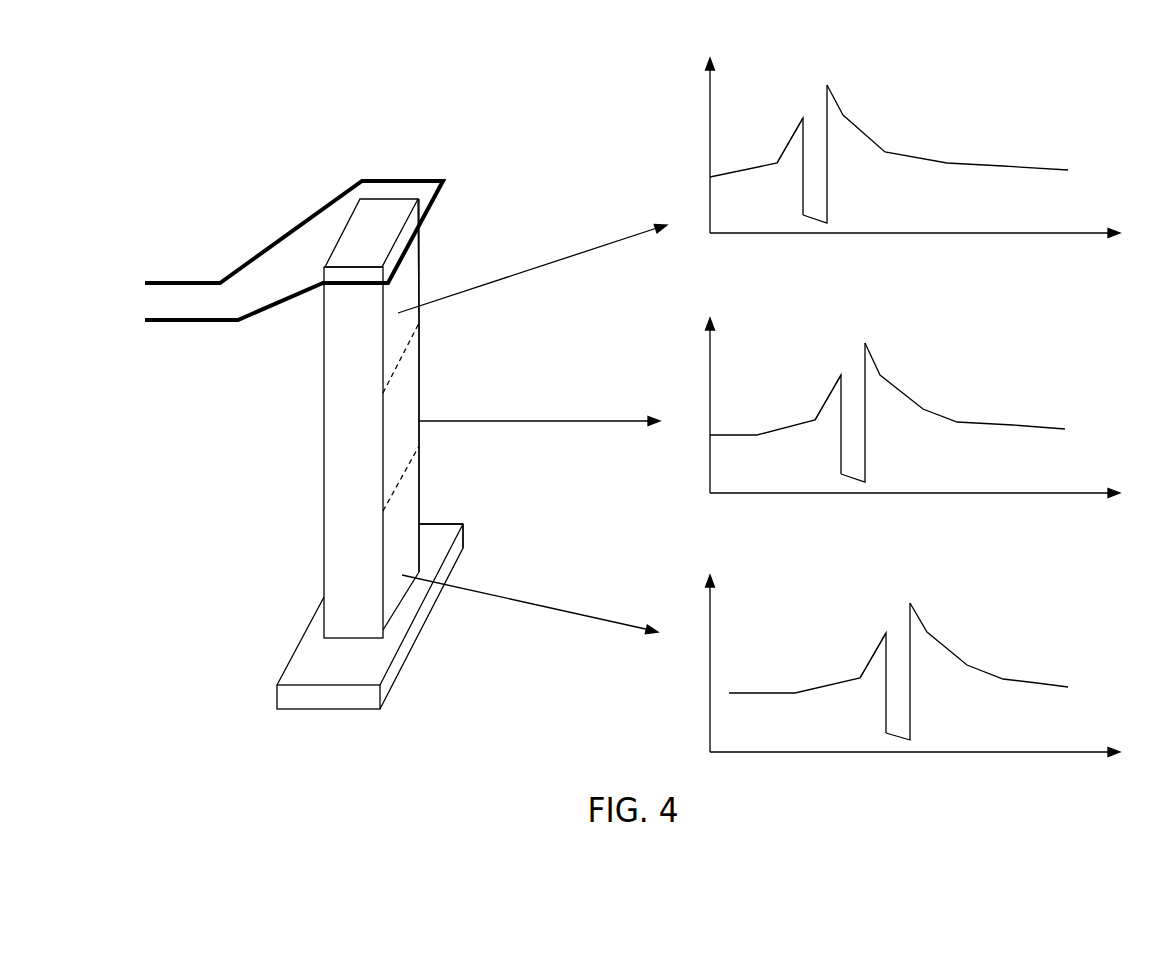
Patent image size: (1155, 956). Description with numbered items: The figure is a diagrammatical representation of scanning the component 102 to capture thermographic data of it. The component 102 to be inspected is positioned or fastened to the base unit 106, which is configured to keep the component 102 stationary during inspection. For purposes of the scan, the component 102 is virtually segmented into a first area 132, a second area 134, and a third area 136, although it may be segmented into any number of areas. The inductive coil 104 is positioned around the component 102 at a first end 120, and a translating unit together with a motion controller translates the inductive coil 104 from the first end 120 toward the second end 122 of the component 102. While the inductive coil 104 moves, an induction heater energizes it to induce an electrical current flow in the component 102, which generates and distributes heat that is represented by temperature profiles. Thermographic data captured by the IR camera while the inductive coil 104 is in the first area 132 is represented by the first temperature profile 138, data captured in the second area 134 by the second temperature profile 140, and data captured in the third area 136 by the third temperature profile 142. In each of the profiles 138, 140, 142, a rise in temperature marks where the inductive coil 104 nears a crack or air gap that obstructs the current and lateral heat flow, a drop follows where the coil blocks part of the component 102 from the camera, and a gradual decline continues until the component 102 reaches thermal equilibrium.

The component 102 is at (345, 627).
The inductive coil 104 is at (403, 180).
The base unit 106 is at (327, 712).
The first end 120 is at (332, 224).
The second end 122 is at (435, 563).
The first area 132 is at (412, 257).
The second area 134 is at (412, 385).
The third area 136 is at (412, 509).
The first temperature profile 138 is at (901, 160).
The second temperature profile 140 is at (909, 419).
The third temperature profile 142 is at (910, 678).